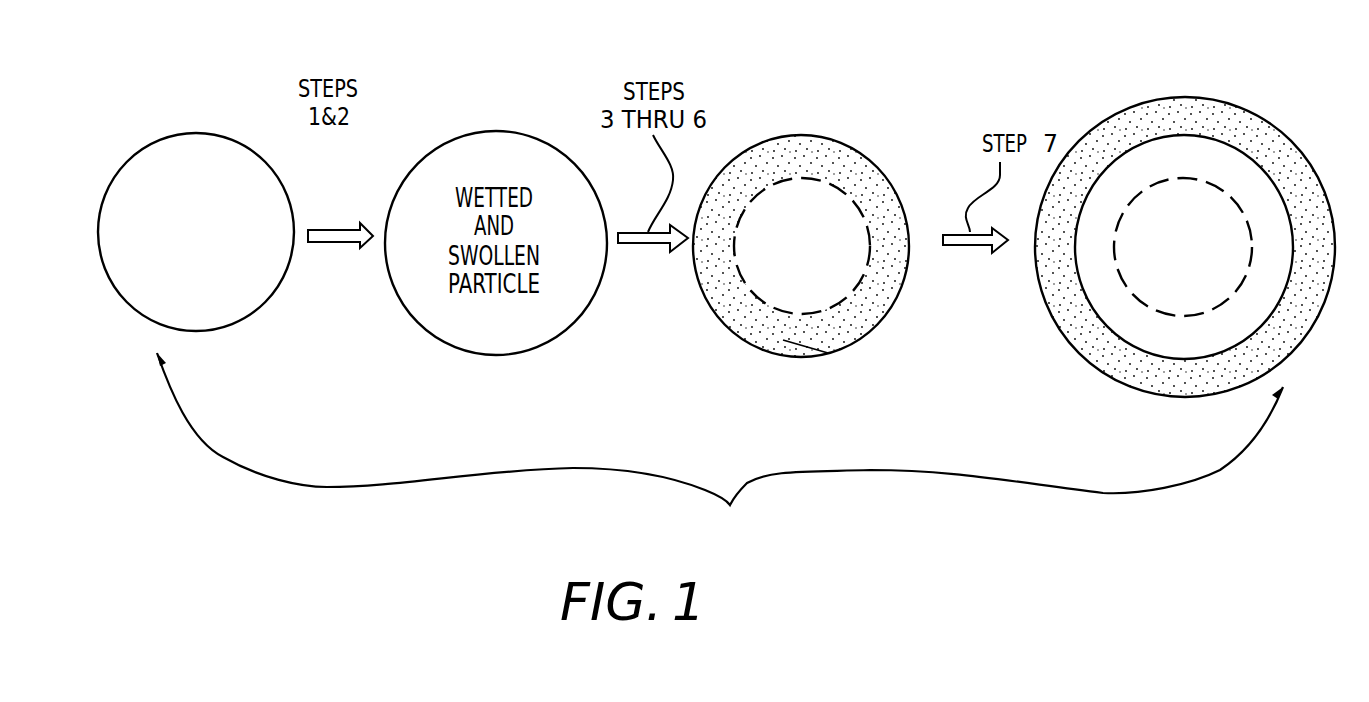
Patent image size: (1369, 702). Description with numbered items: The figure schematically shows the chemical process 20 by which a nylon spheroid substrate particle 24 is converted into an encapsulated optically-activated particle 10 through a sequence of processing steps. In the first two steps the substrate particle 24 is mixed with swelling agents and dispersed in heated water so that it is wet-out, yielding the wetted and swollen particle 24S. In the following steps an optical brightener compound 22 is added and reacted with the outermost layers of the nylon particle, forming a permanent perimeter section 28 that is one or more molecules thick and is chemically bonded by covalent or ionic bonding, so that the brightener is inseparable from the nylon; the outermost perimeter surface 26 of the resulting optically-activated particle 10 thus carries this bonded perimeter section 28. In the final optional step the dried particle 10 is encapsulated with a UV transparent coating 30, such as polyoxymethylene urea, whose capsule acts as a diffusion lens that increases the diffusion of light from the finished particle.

The optically-activated particle 10 is at (828, 108).
The chemical process 20 is at (720, 449).
The optical brightener compound 22 is at (867, 183).
The substrate particle 24 is at (205, 150).
The wetted and swollen particle 24S is at (510, 150).
The outermost perimeter surface 26 is at (770, 137).
The perimeter section 28 is at (805, 313).
The UV transparent coating 30 is at (1123, 120).